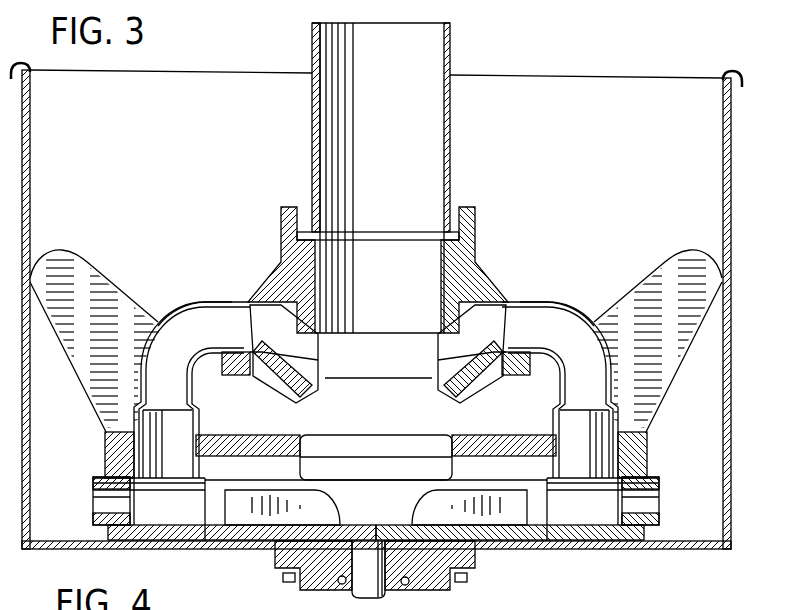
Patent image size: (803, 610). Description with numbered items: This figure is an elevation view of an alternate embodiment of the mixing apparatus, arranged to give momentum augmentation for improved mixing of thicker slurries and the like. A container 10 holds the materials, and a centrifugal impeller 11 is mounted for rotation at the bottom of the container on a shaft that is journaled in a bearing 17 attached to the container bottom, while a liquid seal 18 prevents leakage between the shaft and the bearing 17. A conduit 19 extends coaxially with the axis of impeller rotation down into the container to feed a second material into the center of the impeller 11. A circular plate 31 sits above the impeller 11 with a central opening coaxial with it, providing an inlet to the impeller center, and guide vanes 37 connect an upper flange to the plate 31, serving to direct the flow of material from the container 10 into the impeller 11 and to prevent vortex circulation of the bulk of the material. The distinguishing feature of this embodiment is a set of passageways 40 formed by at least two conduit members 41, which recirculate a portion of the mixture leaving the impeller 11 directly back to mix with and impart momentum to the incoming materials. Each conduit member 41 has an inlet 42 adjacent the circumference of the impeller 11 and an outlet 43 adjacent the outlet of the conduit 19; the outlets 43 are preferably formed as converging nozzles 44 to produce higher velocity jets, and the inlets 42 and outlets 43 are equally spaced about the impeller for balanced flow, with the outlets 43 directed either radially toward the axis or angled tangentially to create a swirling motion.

The container 10 is at (731, 180).
The centrifugal impeller 11 is at (508, 535).
The bearing 17 is at (340, 590).
The liquid seal 18 is at (410, 568).
The conduit 19 is at (452, 140).
The circular plate 31 is at (233, 441).
The guide vanes 37 is at (90, 278).
The passageways 40 is at (165, 345).
The conduit members 41 is at (198, 303).
The inlets 42 is at (163, 471).
The outlets 43 is at (288, 393).
The converging nozzles 44 is at (316, 393).